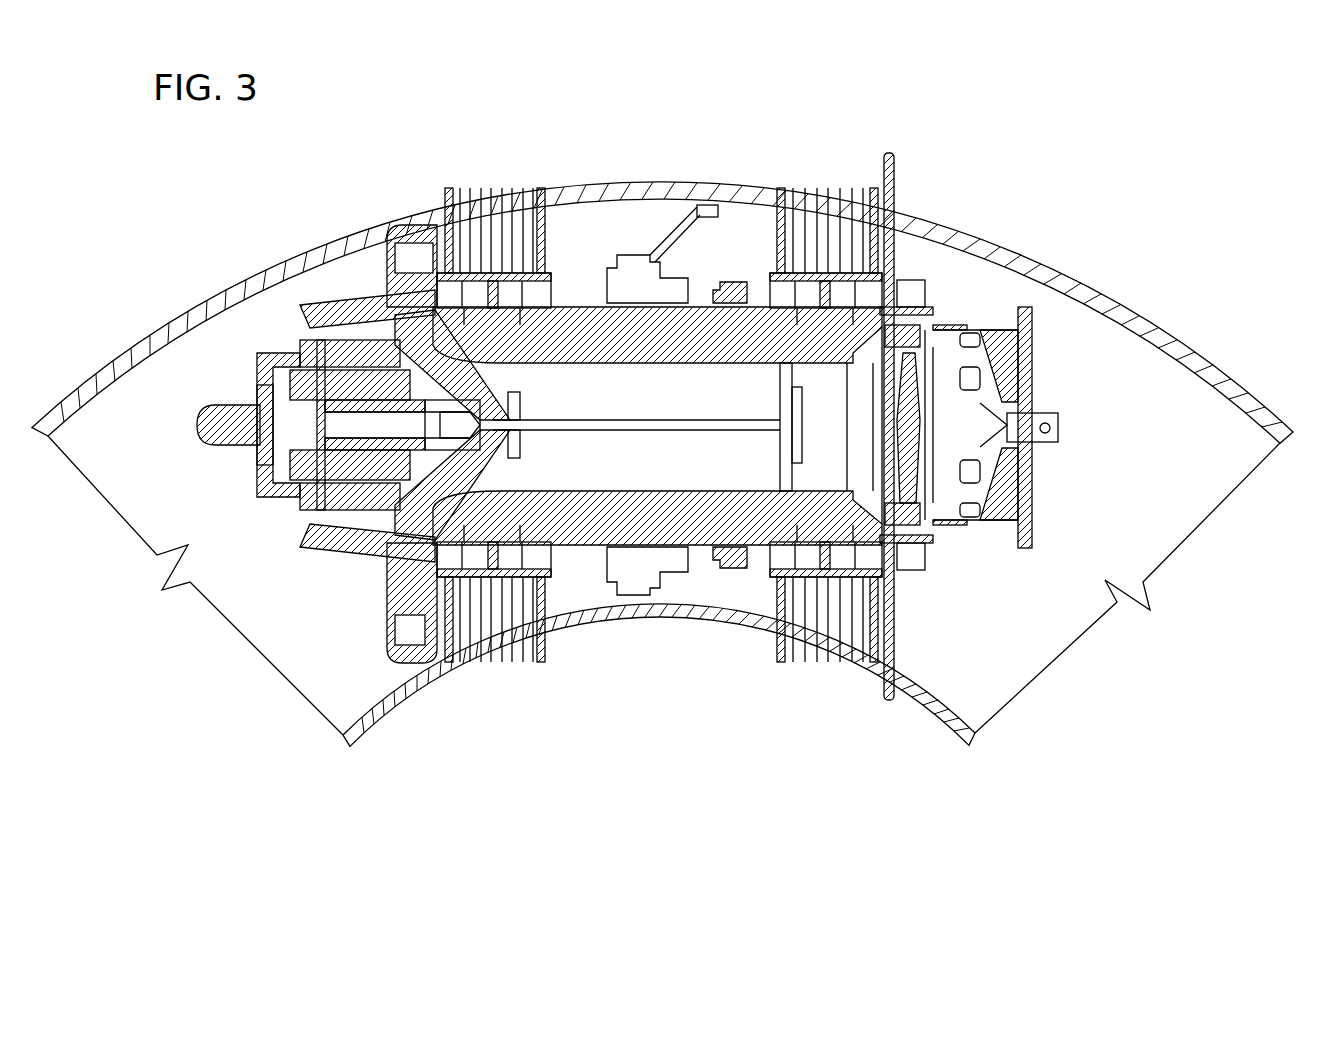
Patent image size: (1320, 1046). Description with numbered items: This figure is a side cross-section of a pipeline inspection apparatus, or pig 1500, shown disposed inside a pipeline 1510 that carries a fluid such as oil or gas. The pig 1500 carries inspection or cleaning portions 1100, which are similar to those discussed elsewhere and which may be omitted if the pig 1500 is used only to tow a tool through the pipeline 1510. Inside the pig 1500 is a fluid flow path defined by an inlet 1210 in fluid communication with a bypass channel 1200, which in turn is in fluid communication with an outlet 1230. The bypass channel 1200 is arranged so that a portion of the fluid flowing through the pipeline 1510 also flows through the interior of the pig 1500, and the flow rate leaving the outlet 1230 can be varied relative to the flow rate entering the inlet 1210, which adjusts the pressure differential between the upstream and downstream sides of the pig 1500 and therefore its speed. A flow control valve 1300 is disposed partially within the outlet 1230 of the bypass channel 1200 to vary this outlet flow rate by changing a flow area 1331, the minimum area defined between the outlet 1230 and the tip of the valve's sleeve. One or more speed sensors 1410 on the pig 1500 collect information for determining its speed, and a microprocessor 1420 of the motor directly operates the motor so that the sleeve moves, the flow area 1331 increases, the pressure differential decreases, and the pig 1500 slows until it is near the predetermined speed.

The inspection or cleaning portions 1100 is at (778, 290).
The bypass channel 1200 is at (675, 462).
The inlet 1210 is at (815, 467).
The outlet 1230 is at (468, 458).
The flow control valve 1300 is at (393, 475).
The flow area 1331 is at (347, 295).
The speed sensor 1410 is at (912, 297).
The microprocessor 1420 is at (920, 557).
The pig 1500 is at (362, 268).
The pipeline 1510 is at (1083, 278).